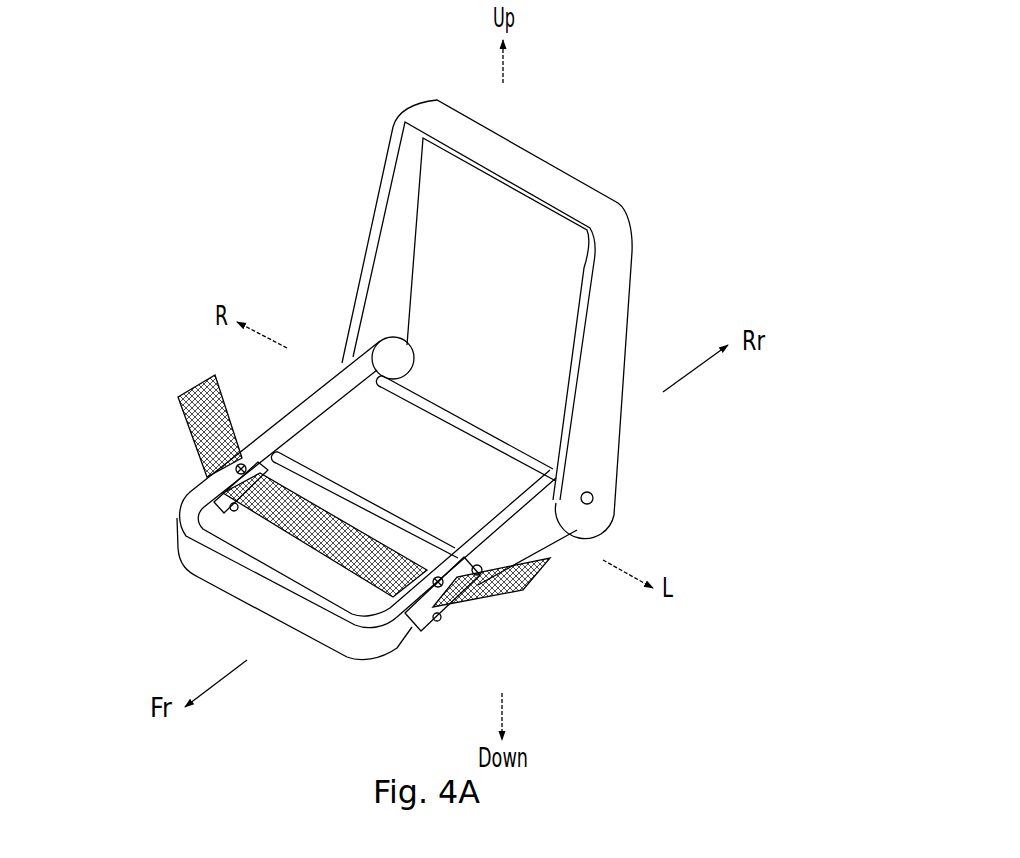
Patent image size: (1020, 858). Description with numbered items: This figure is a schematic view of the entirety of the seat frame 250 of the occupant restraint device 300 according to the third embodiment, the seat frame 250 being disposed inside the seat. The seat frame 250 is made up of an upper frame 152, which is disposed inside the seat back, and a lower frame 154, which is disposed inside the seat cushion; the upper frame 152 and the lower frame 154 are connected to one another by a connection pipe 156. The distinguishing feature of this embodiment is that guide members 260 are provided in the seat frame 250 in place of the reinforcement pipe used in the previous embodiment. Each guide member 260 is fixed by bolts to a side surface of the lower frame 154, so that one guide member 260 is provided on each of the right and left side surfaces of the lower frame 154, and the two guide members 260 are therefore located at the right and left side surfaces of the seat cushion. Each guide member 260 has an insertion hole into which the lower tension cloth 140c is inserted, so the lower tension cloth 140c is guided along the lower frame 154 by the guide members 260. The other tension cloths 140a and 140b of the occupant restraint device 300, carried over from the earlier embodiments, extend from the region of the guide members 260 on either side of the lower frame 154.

The occupant restraint device 300 is at (297, 112).
The seat frame 250 is at (650, 220).
The upper frame 152 is at (532, 163).
The lower frame 154 is at (365, 640).
The connection pipe 156 is at (473, 433).
The tension cloth 140a is at (517, 587).
The tension cloth 140b is at (180, 423).
The lower tension cloth 140c is at (270, 530).
The guide member 260 is at (200, 513).